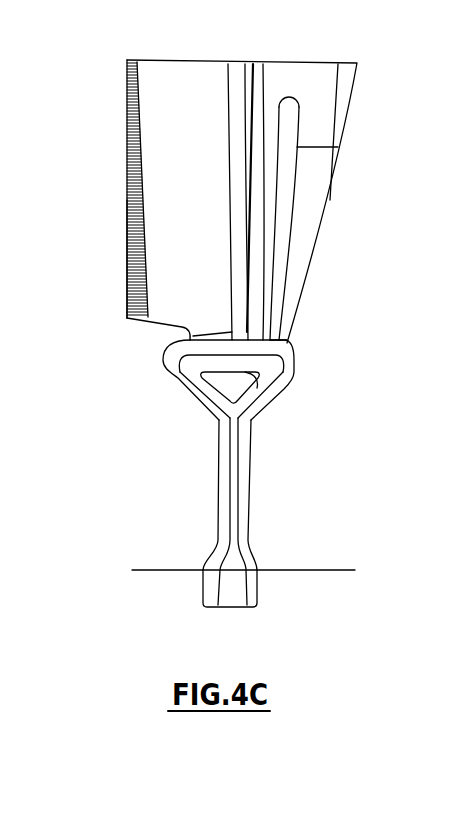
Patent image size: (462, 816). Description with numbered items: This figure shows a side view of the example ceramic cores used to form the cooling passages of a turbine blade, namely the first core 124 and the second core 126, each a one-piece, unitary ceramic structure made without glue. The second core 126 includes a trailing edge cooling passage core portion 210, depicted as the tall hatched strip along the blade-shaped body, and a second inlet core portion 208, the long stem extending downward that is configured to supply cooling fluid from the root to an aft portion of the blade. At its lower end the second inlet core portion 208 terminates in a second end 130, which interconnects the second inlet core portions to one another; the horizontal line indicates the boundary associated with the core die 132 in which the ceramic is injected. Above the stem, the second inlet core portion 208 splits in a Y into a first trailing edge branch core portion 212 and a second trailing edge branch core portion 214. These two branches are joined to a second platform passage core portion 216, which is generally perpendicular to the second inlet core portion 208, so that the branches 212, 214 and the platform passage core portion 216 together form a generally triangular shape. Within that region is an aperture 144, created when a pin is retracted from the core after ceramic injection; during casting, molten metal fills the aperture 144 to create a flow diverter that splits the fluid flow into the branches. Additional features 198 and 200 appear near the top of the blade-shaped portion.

The first core 124 is at (334, 262).
The second core 126 is at (116, 265).
The second end 130 is at (215, 590).
The core die 132 is at (322, 566).
The aperture 144 is at (265, 372).
The tip region 198 is at (344, 110).
The rib 200 is at (263, 70).
The second inlet core portion 208 is at (238, 487).
The trailing edge cooling passage core portion 210 is at (163, 177).
The first trailing edge branch core portion 212 is at (196, 380).
The second trailing edge branch core portion 214 is at (255, 398).
The second platform passage core portion 216 is at (222, 360).